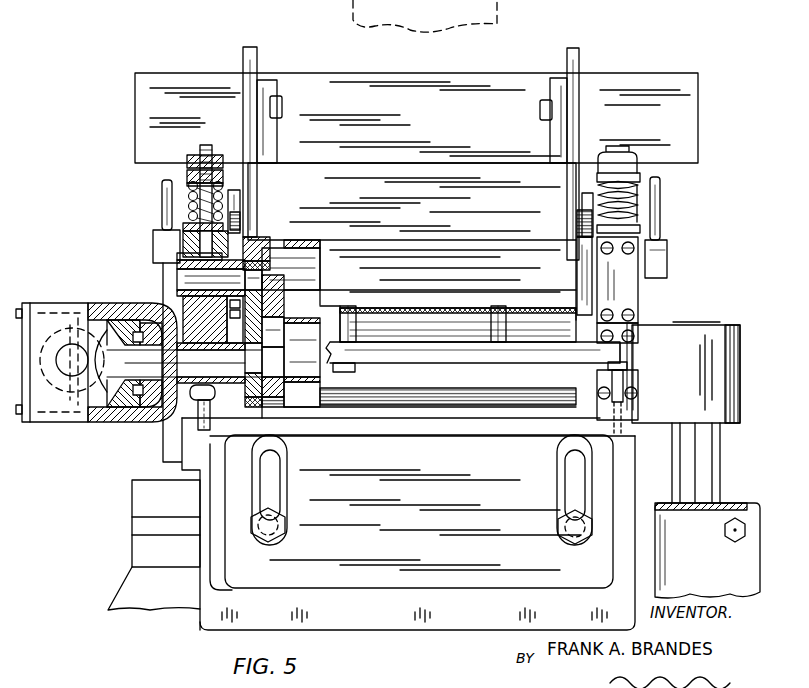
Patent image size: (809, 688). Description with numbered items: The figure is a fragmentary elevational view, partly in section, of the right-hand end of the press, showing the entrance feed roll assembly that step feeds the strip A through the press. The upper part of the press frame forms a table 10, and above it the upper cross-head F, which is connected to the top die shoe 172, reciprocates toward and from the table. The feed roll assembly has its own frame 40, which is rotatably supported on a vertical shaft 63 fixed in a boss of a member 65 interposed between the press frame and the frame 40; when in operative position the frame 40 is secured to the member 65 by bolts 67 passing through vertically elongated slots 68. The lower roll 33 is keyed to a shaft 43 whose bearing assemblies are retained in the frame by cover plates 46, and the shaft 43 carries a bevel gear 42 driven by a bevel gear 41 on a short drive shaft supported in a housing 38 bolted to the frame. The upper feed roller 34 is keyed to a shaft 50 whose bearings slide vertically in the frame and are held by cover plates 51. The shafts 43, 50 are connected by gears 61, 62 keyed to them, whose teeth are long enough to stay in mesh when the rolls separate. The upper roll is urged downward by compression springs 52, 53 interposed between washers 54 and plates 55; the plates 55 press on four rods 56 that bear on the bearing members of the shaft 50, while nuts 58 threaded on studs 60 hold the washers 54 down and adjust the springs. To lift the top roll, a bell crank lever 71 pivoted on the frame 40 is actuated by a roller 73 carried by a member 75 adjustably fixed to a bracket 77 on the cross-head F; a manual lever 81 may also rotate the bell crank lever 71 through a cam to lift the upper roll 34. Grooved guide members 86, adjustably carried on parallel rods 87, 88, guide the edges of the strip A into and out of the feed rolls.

The table 10 is at (150, 502).
The lower roll 33 is at (527, 395).
The upper feed roller 34 is at (497, 230).
The housing 38 is at (114, 305).
The frame 40 is at (195, 452).
The bevel gear 41 is at (128, 305).
The bevel gear 42 is at (102, 420).
The shaft 43 is at (293, 360).
The cover plates 46 is at (628, 354).
The shaft 50 is at (316, 276).
The cover plates 51 is at (632, 304).
The compression spring 52 is at (190, 185).
The compression spring 53 is at (637, 185).
The washers 54 is at (190, 170).
The plates 55 is at (183, 228).
The rods 56 is at (183, 263).
The nuts 58 is at (201, 160).
The studs 60 is at (207, 147).
The gear 61 is at (262, 400).
The gear 62 is at (259, 245).
The vertical shaft 63 is at (700, 323).
The member 65 is at (372, 622).
The bolts 67 is at (287, 528).
The slots 68 is at (280, 492).
The bell crank lever 71 is at (238, 195).
The roller 73 is at (240, 216).
The member 75 is at (245, 55).
The bracket 77 is at (268, 95).
The lever 81 is at (162, 196).
The guide members 86 is at (350, 306).
The rod 87 is at (430, 355).
The rod 88 is at (327, 367).
The top die shoe 172 is at (495, 178).
The upper cross-head F is at (421, 96).
The strip A is at (442, 308).